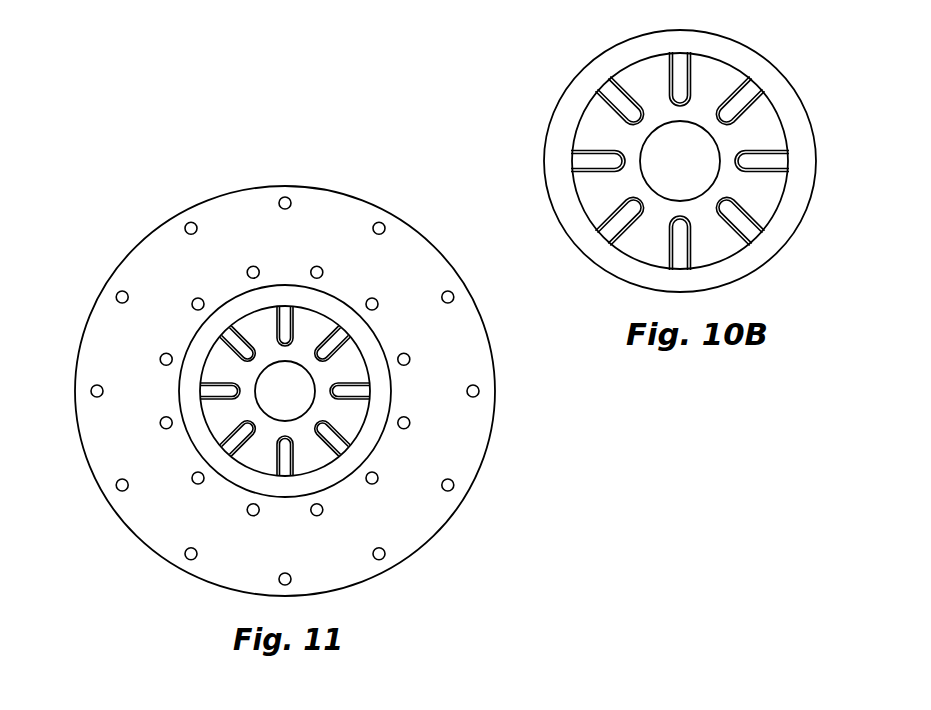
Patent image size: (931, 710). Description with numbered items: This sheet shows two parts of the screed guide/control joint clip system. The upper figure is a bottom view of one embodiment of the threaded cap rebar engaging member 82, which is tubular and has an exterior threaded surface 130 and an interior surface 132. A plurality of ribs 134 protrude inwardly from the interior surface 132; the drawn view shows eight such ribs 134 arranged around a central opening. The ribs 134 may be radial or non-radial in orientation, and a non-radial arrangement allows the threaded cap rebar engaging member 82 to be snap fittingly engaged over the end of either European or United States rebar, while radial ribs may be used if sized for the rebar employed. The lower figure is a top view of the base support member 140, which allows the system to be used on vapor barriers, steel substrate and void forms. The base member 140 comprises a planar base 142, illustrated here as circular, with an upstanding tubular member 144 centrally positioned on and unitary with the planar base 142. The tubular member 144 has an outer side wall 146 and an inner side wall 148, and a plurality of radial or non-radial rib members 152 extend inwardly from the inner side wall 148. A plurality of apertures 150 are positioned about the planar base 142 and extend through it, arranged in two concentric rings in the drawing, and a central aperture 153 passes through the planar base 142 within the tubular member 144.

In FIG. 10B, the threaded cap rebar engaging member 82 is at (826, 104).
In FIG. 10B, the exterior threaded surface 130 is at (777, 68).
In FIG. 10B, the interior surface 132 is at (637, 63).
In FIG. 10B, the ribs 134 is at (598, 152).
In FIG. 11, the base support member 140 is at (140, 167).
In FIG. 11, the planar base 142 is at (135, 262).
In FIG. 11, the upstanding tubular member 144 is at (332, 308).
In FIG. 11, the outer side wall 146 is at (372, 330).
In FIG. 11, the inner side wall 148 is at (243, 322).
In FIG. 11, the apertures 150 is at (160, 359).
In FIG. 11, the rib members 152 is at (285, 322).
In FIG. 11, the central aperture 153 is at (285, 391).